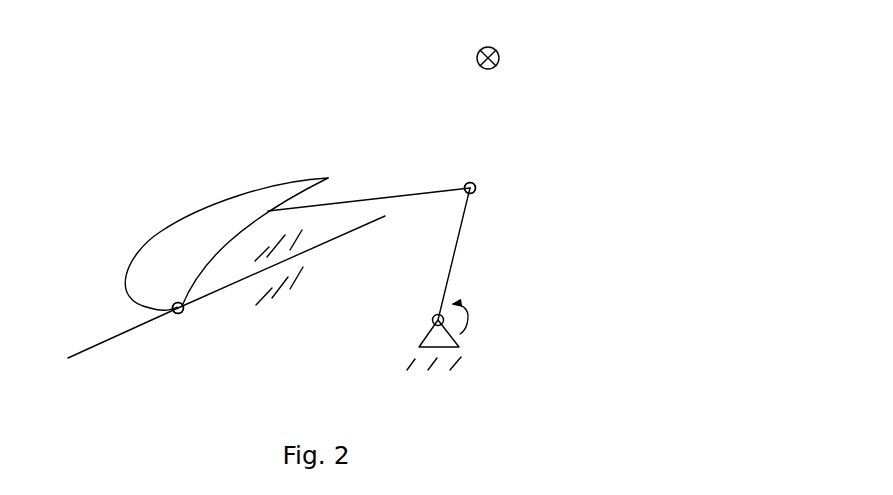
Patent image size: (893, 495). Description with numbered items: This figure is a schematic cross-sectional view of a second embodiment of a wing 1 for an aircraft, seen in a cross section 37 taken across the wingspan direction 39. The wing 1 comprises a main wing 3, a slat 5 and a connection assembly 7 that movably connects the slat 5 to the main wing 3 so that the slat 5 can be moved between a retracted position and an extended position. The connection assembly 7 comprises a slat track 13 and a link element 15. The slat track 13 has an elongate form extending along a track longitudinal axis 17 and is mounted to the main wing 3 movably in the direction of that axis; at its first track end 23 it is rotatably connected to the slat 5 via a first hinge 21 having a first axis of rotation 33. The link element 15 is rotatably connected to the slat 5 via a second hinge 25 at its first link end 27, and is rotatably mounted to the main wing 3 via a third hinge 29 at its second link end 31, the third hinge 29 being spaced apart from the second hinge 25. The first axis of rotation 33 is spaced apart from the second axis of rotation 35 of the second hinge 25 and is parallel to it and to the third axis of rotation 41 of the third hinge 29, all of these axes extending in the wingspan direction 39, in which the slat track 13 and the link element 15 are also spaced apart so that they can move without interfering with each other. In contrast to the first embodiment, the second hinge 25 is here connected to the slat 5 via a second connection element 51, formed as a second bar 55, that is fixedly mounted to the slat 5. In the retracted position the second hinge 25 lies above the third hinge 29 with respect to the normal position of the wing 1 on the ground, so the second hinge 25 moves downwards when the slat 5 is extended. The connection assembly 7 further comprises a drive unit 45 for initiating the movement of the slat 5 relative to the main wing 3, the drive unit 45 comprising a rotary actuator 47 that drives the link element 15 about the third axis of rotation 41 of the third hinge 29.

The wing 1 is at (382, 113).
The main wing 3 is at (414, 231).
The slat 5 is at (168, 259).
The connection assembly 7 is at (537, 153).
The slat track 13 is at (243, 281).
The link element 15 is at (459, 247).
The track longitudinal axis 17 is at (97, 348).
The first hinge 21 is at (180, 315).
The first track end 23 is at (183, 313).
The second hinge 25 is at (502, 149).
The first link end 27 is at (467, 213).
The third hinge 29 is at (378, 325).
The second link end 31 is at (446, 288).
The first axis of rotation 33 is at (207, 365).
The second axis of rotation 35 is at (472, 182).
The cross section 37 is at (200, 140).
The wingspan direction 39 is at (480, 50).
The third axis of rotation 41 is at (432, 320).
The drive unit 45 is at (490, 353).
The rotary actuator 47 is at (449, 336).
The second connection element 51 is at (369, 167).
The second bar 55 is at (378, 198).